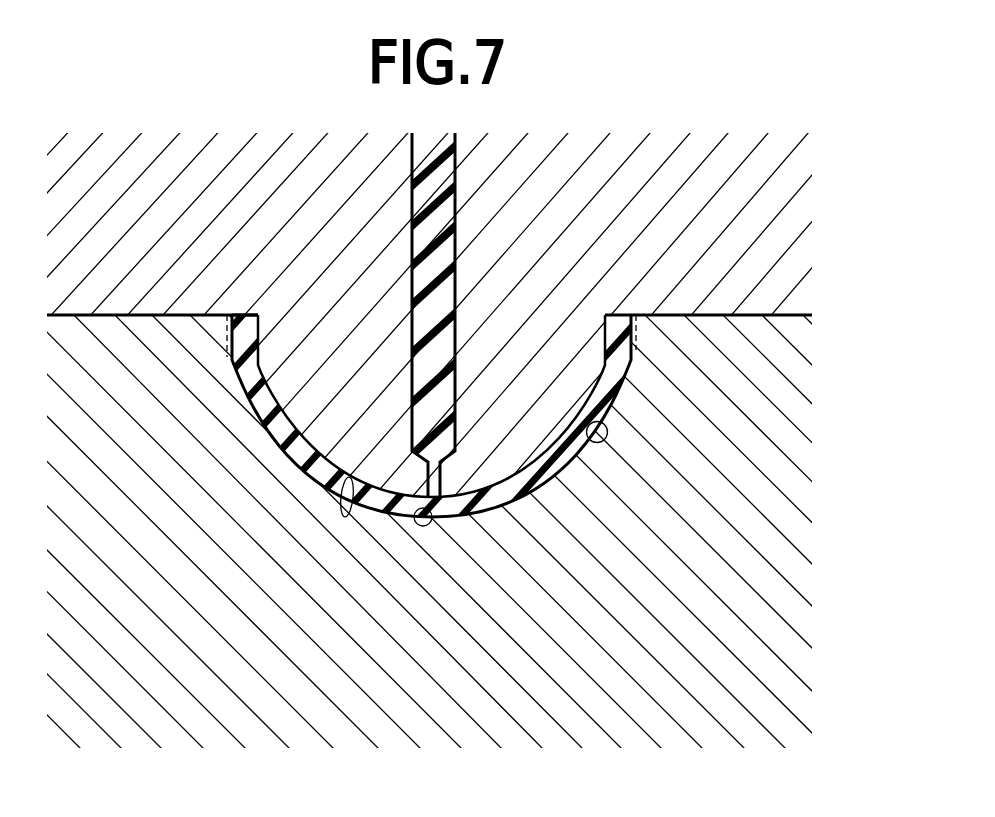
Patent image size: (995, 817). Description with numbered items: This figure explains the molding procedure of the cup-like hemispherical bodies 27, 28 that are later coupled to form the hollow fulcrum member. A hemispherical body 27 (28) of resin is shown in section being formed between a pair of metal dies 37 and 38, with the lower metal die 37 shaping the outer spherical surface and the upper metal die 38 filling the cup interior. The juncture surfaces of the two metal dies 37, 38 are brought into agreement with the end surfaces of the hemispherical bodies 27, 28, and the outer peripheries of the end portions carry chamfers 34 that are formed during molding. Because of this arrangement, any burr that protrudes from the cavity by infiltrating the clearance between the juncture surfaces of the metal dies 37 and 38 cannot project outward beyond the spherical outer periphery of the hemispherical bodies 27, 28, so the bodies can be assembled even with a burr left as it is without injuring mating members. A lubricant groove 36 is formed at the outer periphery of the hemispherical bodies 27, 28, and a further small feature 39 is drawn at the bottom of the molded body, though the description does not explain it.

The hemispherical body 27 is at (388, 421).
The hemispherical body 28 is at (562, 477).
The chamfer 34 is at (228, 339).
The lubricant groove 36 is at (346, 477).
The metal die 37 is at (257, 608).
The metal die 38 is at (369, 335).
The bottom protrusion 39 is at (416, 526).